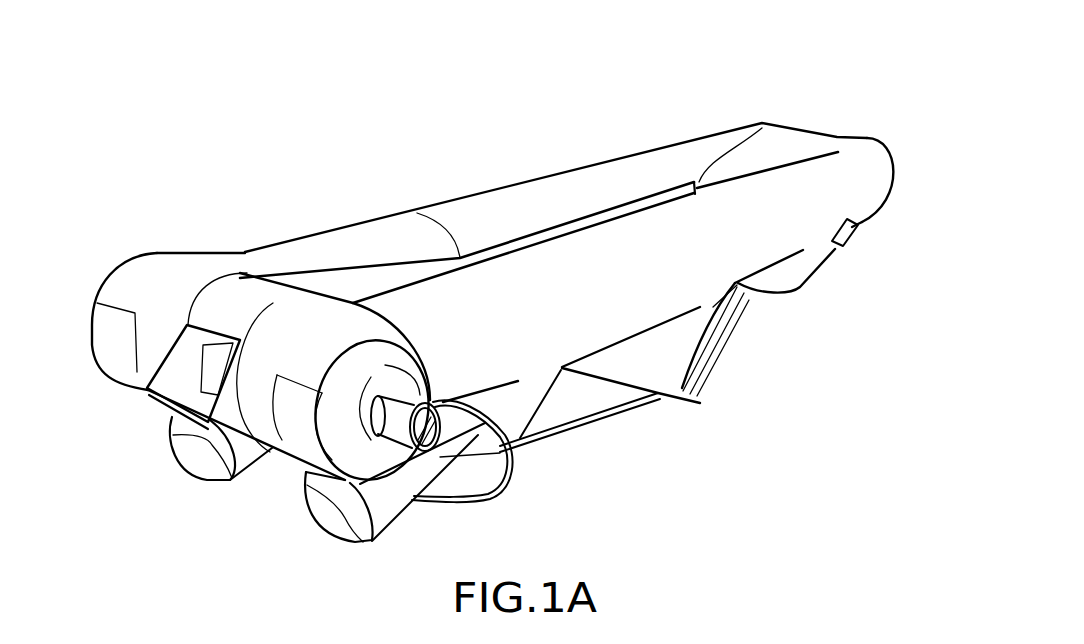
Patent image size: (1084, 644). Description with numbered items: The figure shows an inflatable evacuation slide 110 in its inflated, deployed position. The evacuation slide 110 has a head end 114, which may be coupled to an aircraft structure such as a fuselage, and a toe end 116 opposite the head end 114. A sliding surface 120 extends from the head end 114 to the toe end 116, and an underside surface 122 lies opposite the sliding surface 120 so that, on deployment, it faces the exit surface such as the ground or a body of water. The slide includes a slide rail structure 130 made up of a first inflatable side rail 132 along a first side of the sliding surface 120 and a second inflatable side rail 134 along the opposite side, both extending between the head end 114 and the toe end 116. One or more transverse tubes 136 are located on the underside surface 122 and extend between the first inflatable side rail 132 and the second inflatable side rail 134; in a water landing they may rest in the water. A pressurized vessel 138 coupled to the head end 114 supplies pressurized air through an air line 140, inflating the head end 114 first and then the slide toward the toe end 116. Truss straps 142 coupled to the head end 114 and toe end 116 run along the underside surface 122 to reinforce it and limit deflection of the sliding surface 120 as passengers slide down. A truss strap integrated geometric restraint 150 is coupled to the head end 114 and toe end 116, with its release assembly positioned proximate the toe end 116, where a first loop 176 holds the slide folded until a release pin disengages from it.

The evacuation slide 110 is at (370, 155).
The head end 114 is at (158, 343).
The toe end 116 is at (841, 137).
The sliding surface 120 is at (341, 291).
The underside surface 122 is at (556, 388).
The slide rail structure 130 is at (621, 157).
The first inflatable side rail 132 is at (668, 248).
The second inflatable side rail 134 is at (567, 192).
The transverse tubes 136 is at (667, 372).
The pressurized vessel 138 is at (345, 452).
The air line 140 is at (453, 505).
The truss straps 142 is at (733, 310).
The truss strap integrated geometric restraint 150 is at (853, 246).
The first loop 176 is at (699, 182).